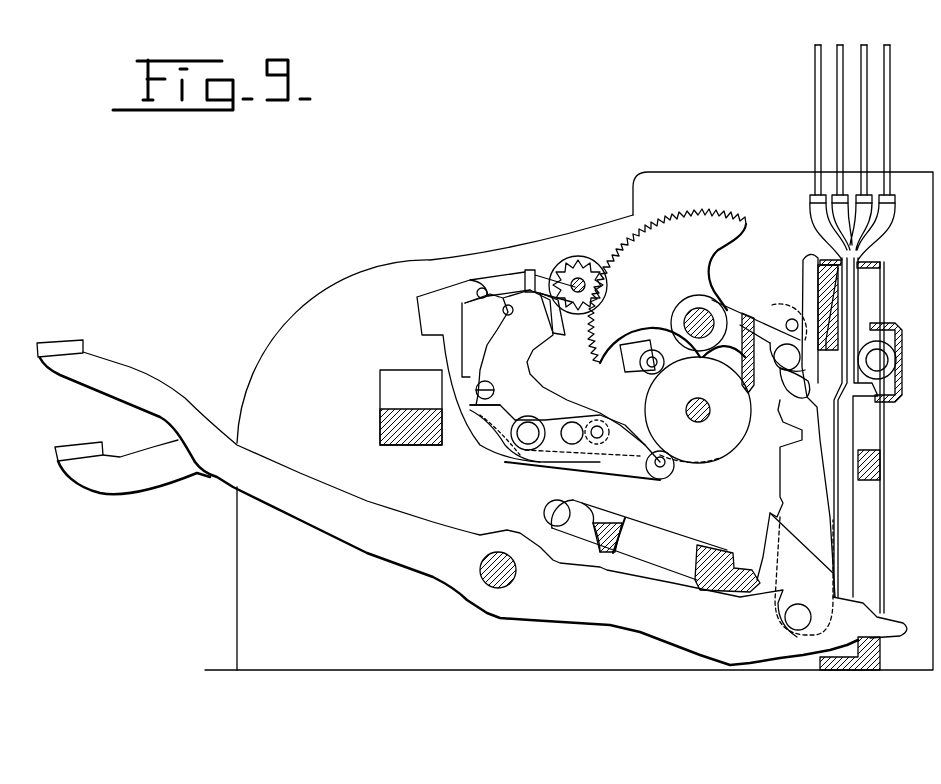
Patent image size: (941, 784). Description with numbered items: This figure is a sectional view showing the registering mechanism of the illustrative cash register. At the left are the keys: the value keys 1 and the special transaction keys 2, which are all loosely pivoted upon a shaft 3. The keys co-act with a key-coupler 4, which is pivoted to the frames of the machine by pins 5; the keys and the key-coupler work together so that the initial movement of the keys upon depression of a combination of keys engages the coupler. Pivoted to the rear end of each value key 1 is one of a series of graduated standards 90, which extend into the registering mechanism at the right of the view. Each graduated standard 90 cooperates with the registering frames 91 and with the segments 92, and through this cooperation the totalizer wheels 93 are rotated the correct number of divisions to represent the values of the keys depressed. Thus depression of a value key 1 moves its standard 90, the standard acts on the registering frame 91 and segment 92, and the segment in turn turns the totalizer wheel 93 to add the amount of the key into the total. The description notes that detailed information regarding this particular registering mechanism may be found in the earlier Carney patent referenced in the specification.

The value keys 1 is at (152, 487).
The special transaction keys 2 is at (158, 392).
The shaft 3 is at (495, 553).
The key-coupler 4 is at (703, 547).
The pins 5 is at (553, 505).
The graduated standards 90 is at (787, 468).
The registering frames 91 is at (732, 317).
The segments 92 is at (705, 230).
The totalizer wheels 93 is at (579, 257).